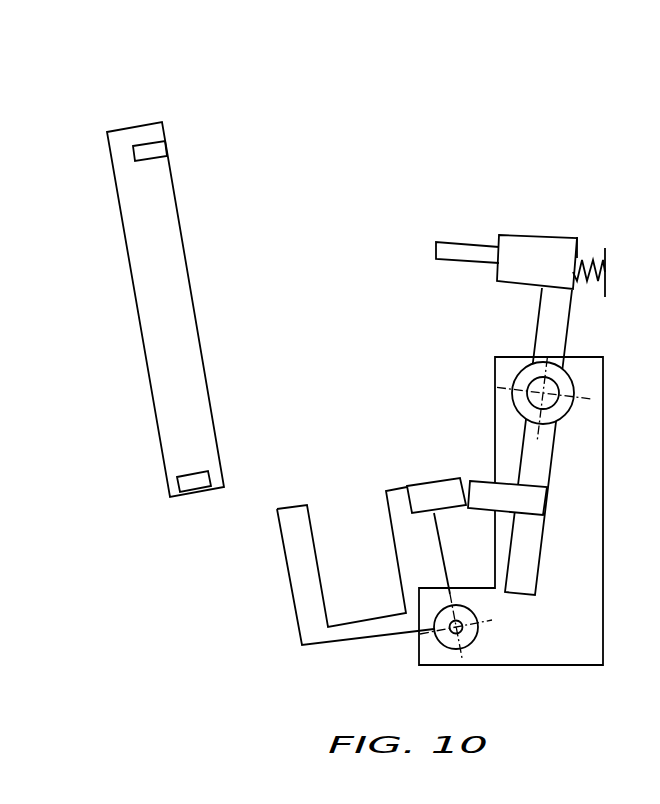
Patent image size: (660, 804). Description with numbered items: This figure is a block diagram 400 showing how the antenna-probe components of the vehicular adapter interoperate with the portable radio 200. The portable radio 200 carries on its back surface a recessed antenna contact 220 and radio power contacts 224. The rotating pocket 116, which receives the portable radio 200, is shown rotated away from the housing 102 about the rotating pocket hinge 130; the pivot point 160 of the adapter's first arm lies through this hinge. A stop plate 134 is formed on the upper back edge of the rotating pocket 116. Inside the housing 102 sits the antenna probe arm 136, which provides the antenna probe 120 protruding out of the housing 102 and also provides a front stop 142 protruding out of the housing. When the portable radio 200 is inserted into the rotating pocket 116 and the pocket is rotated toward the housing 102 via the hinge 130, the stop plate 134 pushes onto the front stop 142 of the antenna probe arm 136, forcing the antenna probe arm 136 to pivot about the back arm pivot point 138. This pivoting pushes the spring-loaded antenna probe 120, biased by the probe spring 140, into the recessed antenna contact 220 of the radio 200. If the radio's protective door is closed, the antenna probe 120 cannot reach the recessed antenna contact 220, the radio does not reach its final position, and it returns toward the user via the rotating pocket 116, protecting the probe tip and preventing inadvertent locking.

The linkage assembly 400 is at (112, 48).
The portable radio 200 is at (135, 126).
The recessed antenna contact 220 is at (167, 147).
The radio power contacts 224 is at (198, 494).
The rotating pocket 116 is at (289, 577).
The stop plate 134 is at (415, 482).
The housing 102 is at (418, 654).
The antenna probe 120 is at (471, 242).
The probe spring 140 is at (594, 259).
The antenna probe arm 136 is at (537, 575).
The back arm pivot point 138 is at (565, 418).
The front stop 142 is at (481, 480).
The rotating pocket hinge 130 is at (477, 636).
The pivot point 160 is at (450, 636).